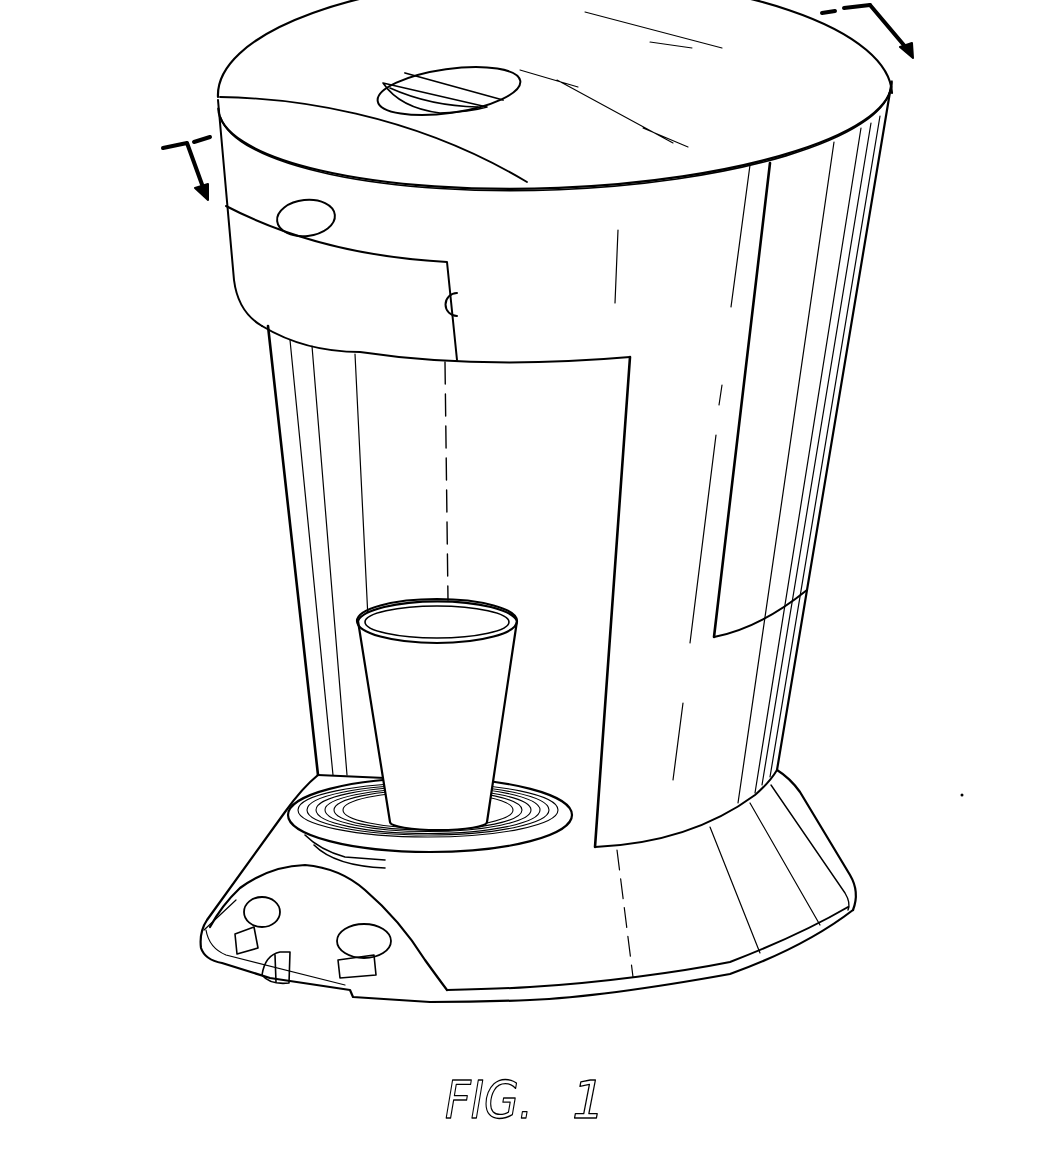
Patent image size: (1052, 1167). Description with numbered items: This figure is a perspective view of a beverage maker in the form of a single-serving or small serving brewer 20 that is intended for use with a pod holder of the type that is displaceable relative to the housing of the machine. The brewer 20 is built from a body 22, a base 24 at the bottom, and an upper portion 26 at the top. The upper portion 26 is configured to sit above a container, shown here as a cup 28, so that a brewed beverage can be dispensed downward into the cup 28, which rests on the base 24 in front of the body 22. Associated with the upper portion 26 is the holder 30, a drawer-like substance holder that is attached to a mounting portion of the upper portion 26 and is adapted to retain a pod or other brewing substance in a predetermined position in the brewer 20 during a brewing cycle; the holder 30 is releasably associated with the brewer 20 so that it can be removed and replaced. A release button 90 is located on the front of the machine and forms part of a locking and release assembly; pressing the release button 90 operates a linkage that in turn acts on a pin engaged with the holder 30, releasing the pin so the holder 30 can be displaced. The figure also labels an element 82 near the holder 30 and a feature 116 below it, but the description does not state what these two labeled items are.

The brewer 20 is at (499, 501).
The body 22 is at (290, 554).
The base 24 is at (223, 882).
The upper portion 26 is at (200, 83).
The cup 28 is at (373, 717).
The holder 30 is at (273, 316).
The latch button 82 is at (460, 316).
The release button 90 is at (300, 219).
The dispensing outlet 116 is at (413, 330).